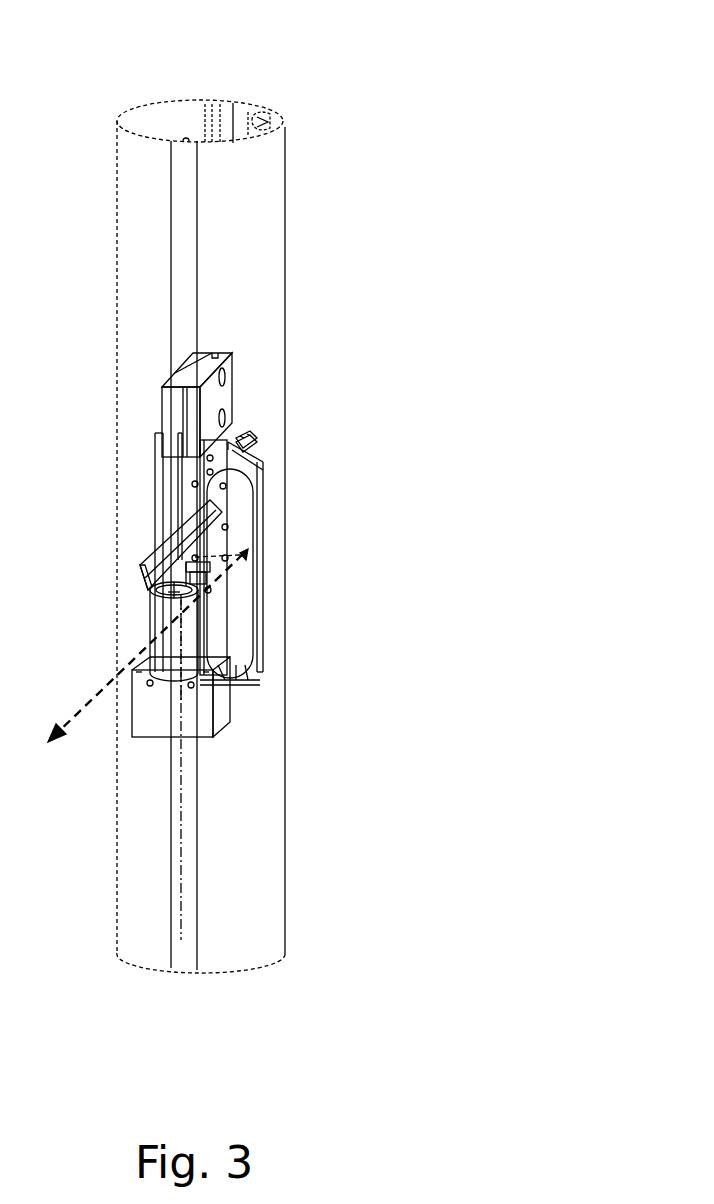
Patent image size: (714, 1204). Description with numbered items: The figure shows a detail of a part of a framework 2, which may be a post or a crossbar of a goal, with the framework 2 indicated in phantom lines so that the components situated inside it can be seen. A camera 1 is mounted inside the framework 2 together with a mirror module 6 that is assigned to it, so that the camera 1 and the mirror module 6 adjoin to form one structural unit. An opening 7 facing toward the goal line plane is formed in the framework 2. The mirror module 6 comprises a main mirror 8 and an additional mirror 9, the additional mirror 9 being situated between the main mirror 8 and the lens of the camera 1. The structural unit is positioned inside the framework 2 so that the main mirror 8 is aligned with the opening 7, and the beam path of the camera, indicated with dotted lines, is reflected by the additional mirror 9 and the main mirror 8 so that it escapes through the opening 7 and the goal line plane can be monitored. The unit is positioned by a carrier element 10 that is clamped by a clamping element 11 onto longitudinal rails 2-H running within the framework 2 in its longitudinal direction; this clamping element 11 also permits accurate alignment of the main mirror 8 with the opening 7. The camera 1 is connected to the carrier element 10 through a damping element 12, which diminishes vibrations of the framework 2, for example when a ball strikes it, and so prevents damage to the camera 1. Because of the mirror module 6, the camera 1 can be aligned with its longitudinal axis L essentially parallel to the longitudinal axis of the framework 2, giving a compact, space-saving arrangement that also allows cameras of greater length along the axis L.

The camera 1 is at (160, 618).
The framework 2 is at (262, 240).
The longitudinal rails 2-H is at (232, 102).
The mirror module 6 is at (310, 566).
The opening 7 is at (220, 540).
The main mirror 8 is at (245, 615).
The additional mirror 9 is at (178, 543).
The carrier element 10 is at (163, 492).
The clamping element 11 is at (175, 418).
The damping element 12 is at (153, 712).
The longitudinal axis L is at (180, 878).